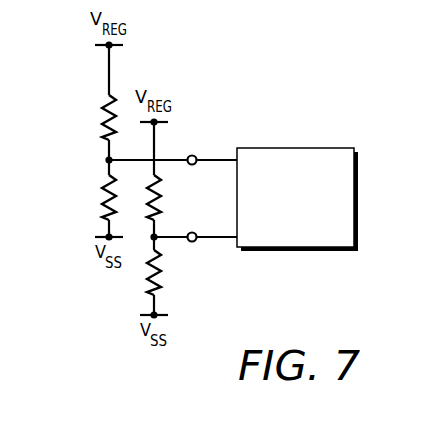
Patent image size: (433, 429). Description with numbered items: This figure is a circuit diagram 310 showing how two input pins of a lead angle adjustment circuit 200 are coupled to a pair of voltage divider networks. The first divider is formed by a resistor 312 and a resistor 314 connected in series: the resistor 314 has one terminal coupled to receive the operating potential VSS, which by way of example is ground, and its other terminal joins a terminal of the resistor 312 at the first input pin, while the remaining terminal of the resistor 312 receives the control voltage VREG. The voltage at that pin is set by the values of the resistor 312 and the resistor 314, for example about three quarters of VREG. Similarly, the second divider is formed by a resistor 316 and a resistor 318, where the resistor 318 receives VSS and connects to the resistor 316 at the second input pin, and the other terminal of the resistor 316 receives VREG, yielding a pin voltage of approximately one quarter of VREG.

The lead angle adjustment circuit 200 is at (310, 148).
The circuit diagram 310 is at (355, 319).
The resistor 312 is at (102, 112).
The resistor 314 is at (103, 188).
The resistor 316 is at (162, 199).
The resistor 318 is at (162, 279).